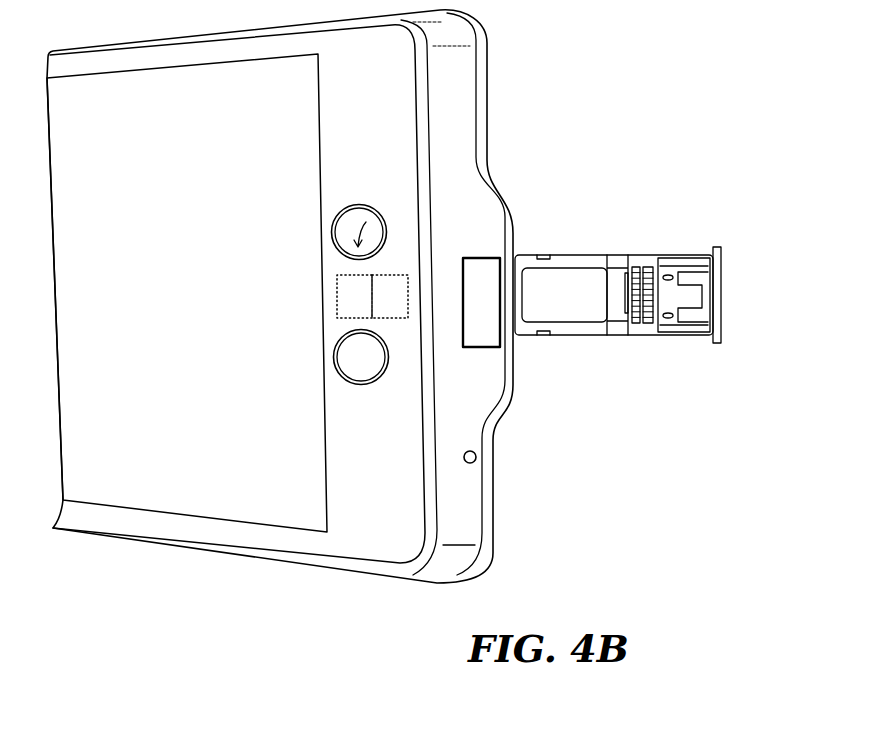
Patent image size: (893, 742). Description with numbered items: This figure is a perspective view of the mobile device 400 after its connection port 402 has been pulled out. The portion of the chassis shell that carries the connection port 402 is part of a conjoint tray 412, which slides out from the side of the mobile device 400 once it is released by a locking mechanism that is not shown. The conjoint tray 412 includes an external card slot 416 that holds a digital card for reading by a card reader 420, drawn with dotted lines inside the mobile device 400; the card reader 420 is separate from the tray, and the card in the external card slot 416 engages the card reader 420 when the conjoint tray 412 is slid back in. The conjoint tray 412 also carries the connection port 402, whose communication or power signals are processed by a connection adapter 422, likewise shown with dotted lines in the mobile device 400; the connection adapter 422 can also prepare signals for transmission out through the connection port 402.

The mobile device 400 is at (747, 110).
The connection port 402 is at (627, 247).
The conjoint tray 412 is at (629, 336).
The external card slot 416 is at (522, 253).
The card reader 420 is at (353, 275).
The connection adapter 422 is at (398, 320).